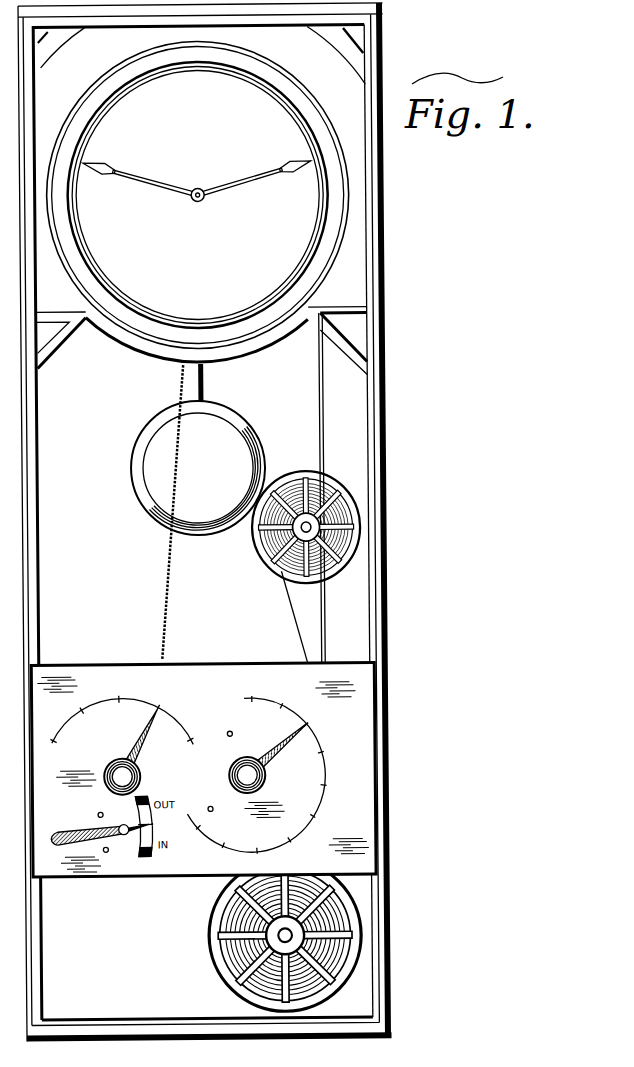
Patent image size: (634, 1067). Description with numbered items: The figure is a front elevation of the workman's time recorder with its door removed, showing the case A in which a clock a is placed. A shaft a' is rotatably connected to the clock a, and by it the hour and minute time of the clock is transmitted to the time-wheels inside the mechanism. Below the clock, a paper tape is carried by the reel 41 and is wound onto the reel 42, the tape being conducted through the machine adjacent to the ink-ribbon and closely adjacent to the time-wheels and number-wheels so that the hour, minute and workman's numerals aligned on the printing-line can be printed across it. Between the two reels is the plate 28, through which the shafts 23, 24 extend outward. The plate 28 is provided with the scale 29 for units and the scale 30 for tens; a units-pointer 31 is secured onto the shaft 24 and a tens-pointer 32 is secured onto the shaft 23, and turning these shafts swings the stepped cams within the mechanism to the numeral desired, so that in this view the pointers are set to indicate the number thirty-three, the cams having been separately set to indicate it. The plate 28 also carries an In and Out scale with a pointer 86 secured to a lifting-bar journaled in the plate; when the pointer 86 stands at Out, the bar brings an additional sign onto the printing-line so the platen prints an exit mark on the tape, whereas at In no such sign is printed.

The case A is at (224, 522).
The clock a is at (197, 195).
The shaft a' is at (180, 512).
The reel 42 is at (307, 559).
The reel 41 is at (266, 936).
The plate 28 is at (203, 769).
The scale for tens 30 is at (121, 710).
The tens-pointer 32 is at (148, 736).
The shaft 23 is at (122, 777).
The scale for units 29 is at (266, 775).
The units-pointer 31 is at (283, 744).
The shaft 24 is at (247, 775).
The pointer 86 is at (100, 824).